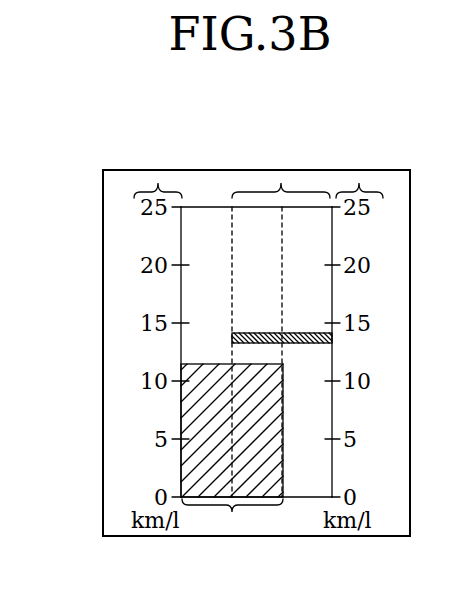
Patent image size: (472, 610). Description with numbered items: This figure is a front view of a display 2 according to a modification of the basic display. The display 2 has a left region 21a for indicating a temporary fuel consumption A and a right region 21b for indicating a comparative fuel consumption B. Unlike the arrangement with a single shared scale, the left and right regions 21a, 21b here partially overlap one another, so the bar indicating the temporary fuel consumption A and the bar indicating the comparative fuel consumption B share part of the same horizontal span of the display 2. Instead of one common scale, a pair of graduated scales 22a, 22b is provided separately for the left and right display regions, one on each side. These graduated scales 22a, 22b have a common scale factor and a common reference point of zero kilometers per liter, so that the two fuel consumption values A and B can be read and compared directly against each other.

The display 2 is at (98, 498).
The left region 21a is at (232, 512).
The right region 21b is at (281, 182).
The graduated scale 22a is at (158, 182).
The graduated scale 22b is at (359, 182).
The temporary fuel consumption A is at (186, 406).
The comparative fuel consumption B is at (333, 340).